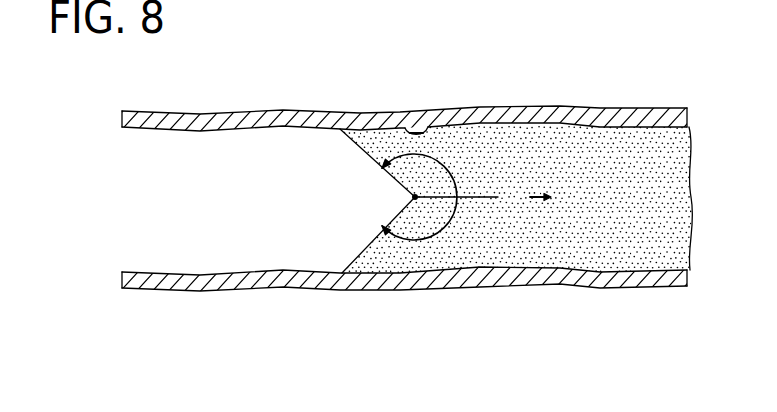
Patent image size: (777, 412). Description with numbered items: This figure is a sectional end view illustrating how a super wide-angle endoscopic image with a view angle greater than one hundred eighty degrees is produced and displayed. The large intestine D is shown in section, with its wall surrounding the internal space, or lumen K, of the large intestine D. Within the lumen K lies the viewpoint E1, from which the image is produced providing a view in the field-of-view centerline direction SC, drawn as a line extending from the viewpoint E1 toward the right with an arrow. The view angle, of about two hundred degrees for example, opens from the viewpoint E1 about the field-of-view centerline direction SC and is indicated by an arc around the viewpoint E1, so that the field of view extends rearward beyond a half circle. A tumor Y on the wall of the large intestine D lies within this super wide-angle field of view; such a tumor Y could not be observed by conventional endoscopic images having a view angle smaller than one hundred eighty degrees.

The lumen K is at (211, 185).
The tumor Y is at (413, 127).
The large intestine D is at (590, 108).
The viewpoint E1 is at (412, 197).
The field-of-view centerline direction SC is at (508, 200).